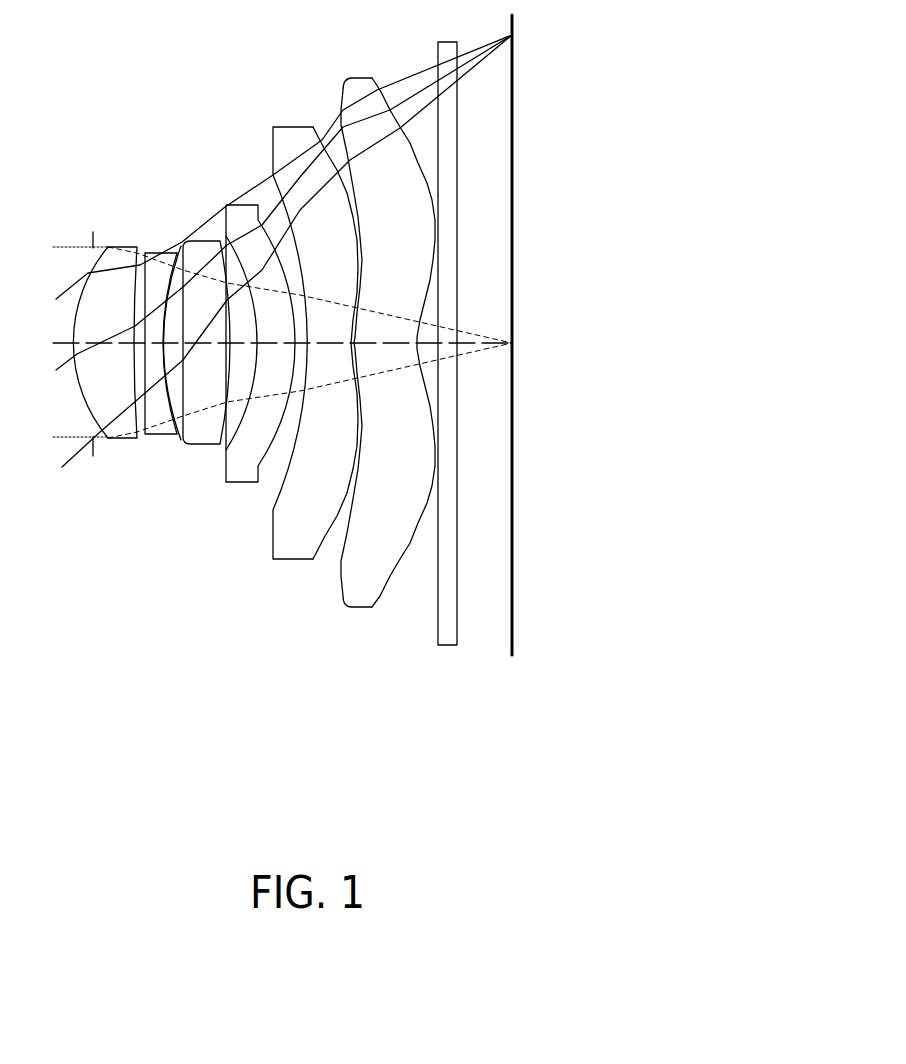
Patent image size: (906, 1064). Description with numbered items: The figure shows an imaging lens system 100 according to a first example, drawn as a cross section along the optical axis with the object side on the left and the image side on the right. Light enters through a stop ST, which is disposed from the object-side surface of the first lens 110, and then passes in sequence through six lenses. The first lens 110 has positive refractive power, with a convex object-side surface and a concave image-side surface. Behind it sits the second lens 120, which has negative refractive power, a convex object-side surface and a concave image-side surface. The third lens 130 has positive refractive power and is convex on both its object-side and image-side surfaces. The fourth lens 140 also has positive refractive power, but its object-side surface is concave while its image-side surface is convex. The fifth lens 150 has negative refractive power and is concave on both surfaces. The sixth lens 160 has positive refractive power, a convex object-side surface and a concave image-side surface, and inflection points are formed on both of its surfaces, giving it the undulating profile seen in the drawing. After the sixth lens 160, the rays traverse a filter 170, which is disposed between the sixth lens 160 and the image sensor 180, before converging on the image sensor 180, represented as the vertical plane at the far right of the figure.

The imaging lens system 100 is at (158, 118).
The stop ST is at (95, 240).
The first lens 110 is at (115, 440).
The second lens 120 is at (160, 436).
The third lens 130 is at (195, 446).
The fourth lens 140 is at (237, 484).
The fifth lens 150 is at (292, 561).
The sixth lens 160 is at (357, 609).
The filter 170 is at (448, 647).
The image sensor 180 is at (513, 657).